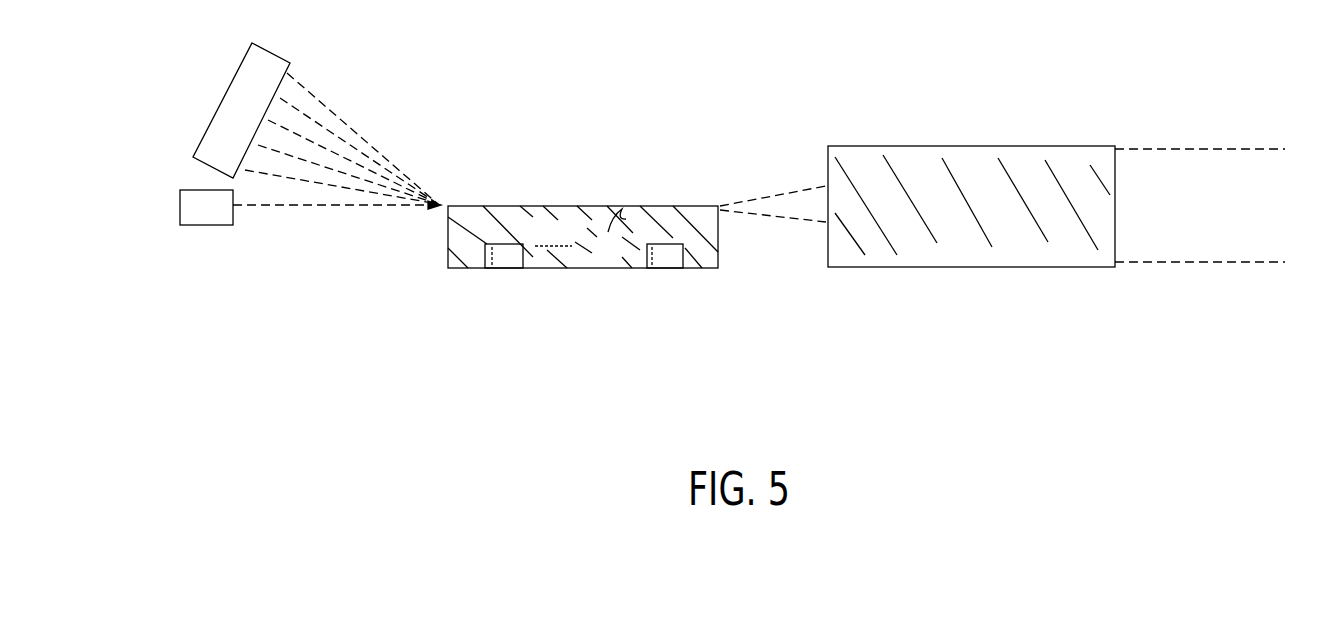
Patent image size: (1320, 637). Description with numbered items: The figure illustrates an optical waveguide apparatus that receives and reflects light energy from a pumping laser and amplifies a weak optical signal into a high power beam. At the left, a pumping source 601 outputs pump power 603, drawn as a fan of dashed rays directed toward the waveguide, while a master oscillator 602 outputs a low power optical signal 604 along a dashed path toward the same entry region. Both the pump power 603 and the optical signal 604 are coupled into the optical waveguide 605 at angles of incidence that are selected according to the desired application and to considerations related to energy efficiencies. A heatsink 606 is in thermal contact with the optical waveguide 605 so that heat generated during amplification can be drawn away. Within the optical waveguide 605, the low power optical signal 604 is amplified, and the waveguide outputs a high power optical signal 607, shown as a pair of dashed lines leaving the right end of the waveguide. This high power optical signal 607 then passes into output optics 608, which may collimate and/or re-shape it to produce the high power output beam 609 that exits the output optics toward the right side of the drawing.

The pumping source 601 is at (223, 97).
The master oscillator 602 is at (205, 227).
The pump power 603 is at (343, 98).
The low power optical signal 604 is at (332, 210).
The optical waveguide 605 is at (584, 195).
The heatsink 606 is at (465, 283).
The high power optical signal 607 is at (782, 218).
The output optics 608 is at (968, 145).
The high power output beam 609 is at (1208, 136).